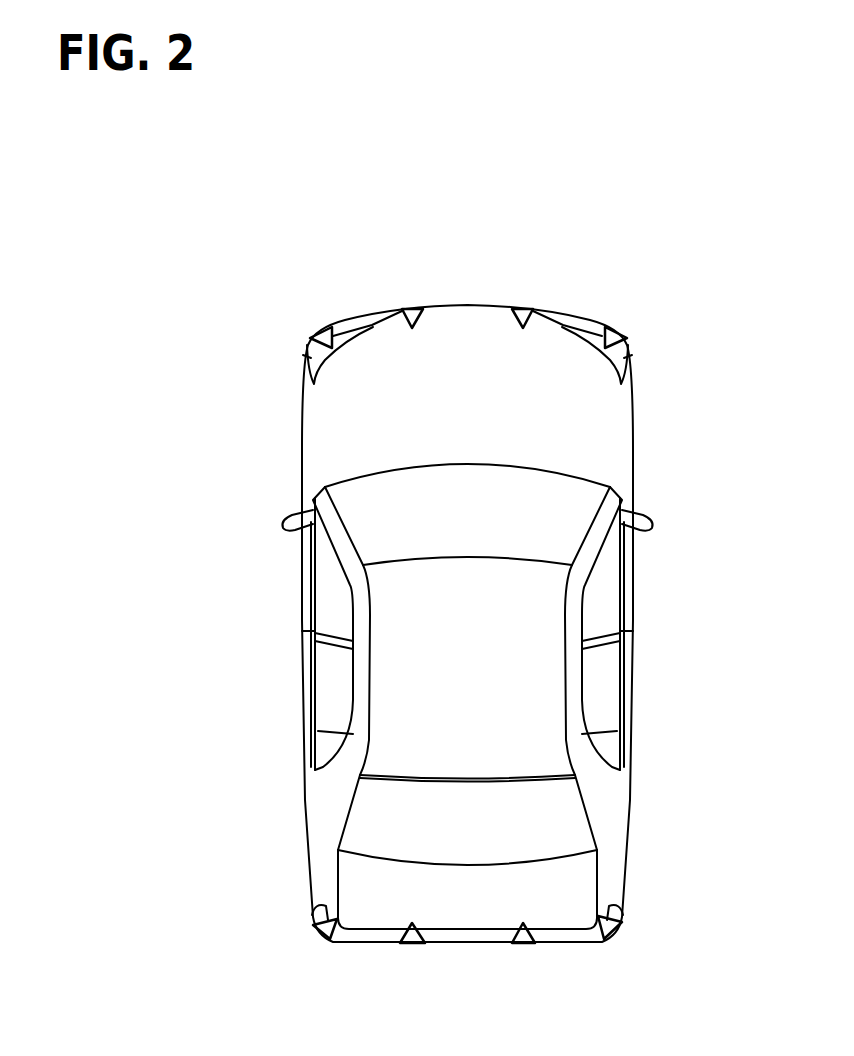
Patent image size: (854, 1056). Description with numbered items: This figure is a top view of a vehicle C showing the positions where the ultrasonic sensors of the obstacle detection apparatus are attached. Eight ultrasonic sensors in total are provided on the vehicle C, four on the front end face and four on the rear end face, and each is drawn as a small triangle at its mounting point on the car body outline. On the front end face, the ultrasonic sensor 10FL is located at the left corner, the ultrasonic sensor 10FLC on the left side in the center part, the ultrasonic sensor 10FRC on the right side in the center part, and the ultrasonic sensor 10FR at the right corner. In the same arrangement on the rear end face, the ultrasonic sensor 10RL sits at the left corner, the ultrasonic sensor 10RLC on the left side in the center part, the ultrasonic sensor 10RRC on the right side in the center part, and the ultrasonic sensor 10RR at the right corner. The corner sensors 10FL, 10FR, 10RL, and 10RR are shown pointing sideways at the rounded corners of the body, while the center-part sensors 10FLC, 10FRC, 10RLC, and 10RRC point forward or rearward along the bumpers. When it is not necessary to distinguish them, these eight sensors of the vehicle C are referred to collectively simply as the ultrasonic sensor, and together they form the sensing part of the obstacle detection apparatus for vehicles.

The vehicle C is at (680, 482).
The ultrasonic sensor 10FL is at (316, 336).
The ultrasonic sensor 10FLC is at (407, 309).
The ultrasonic sensor 10FRC is at (528, 309).
The ultrasonic sensor 10FR is at (622, 333).
The ultrasonic sensor 10RL is at (321, 933).
The ultrasonic sensor 10RLC is at (411, 943).
The ultrasonic sensor 10RRC is at (527, 943).
The ultrasonic sensor 10RR is at (612, 937).